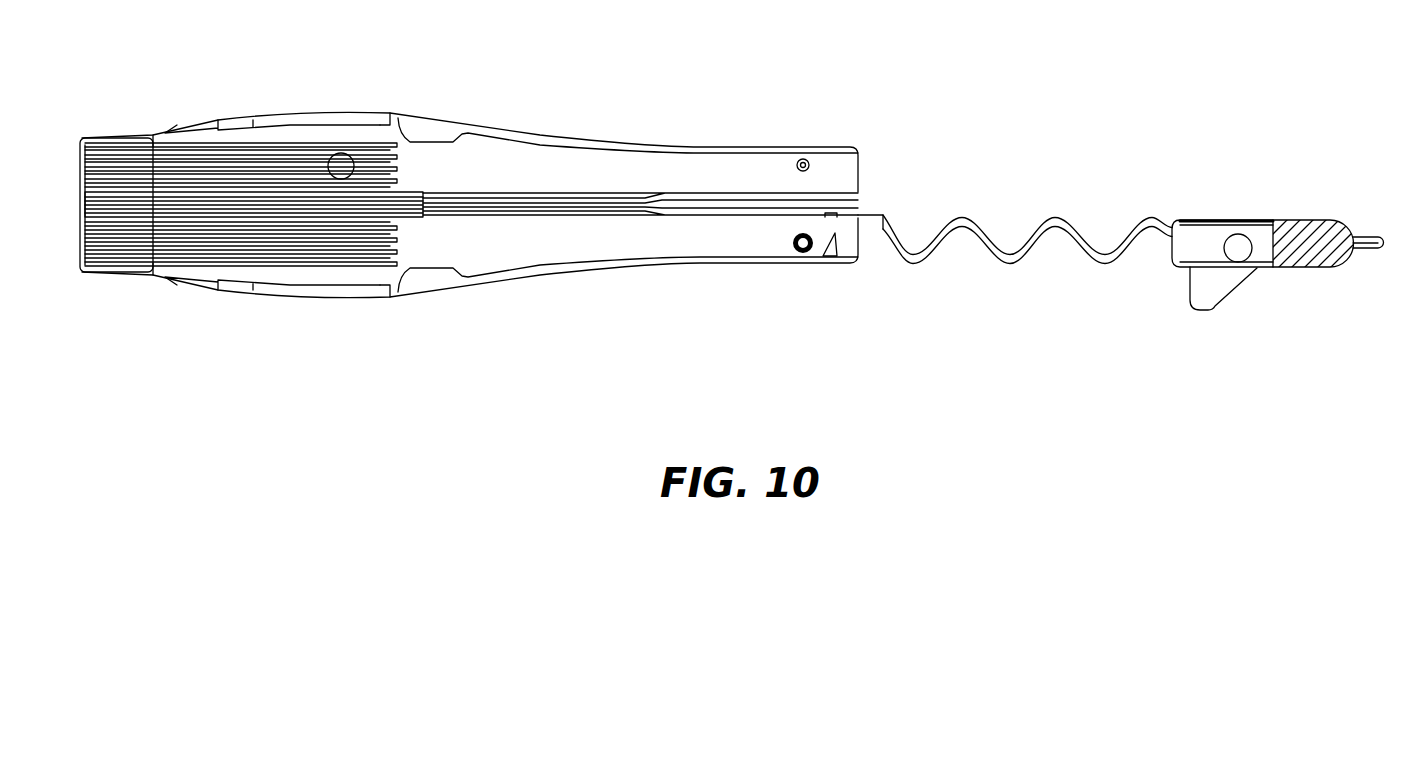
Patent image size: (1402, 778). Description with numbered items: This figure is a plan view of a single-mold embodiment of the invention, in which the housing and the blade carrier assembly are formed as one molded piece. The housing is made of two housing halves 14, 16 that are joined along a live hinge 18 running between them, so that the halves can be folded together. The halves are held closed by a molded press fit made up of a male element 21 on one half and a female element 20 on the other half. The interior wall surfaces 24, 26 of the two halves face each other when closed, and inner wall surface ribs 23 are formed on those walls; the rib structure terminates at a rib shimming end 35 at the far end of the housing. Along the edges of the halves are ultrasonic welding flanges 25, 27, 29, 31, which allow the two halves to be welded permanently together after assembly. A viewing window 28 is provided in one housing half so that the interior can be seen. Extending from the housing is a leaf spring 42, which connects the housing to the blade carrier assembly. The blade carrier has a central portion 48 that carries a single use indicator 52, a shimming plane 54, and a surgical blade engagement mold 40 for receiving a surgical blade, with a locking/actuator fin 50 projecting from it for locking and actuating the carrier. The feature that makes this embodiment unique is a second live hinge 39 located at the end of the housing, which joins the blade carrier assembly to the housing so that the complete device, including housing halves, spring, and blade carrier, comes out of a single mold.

The housing half 14 is at (851, 164).
The housing half 16 is at (563, 277).
The live hinge 18 is at (847, 199).
The female element 20 is at (803, 251).
The male element 21 is at (802, 158).
The inner wall surface ribs 23 is at (105, 165).
The interior wall surface 24 is at (742, 163).
The ultrasonic welding flange 25 is at (143, 134).
The interior wall surface 26 is at (677, 242).
The ultrasonic welding flange 27 is at (423, 128).
The viewing window 28 is at (340, 163).
The ultrasonic welding flange 29 is at (138, 274).
The ultrasonic welding flange 31 is at (437, 277).
The rib shimming end 35 is at (92, 273).
The second live hinge 39 is at (858, 233).
The surgical blade engagement mold 40 is at (1362, 240).
The leaf spring 42 is at (962, 219).
The central portion of the blade carrier 48 is at (1197, 220).
The locking/actuator fin 50 is at (1200, 309).
The single use indicator 52 is at (1238, 236).
The shimming plane 54 is at (1308, 263).